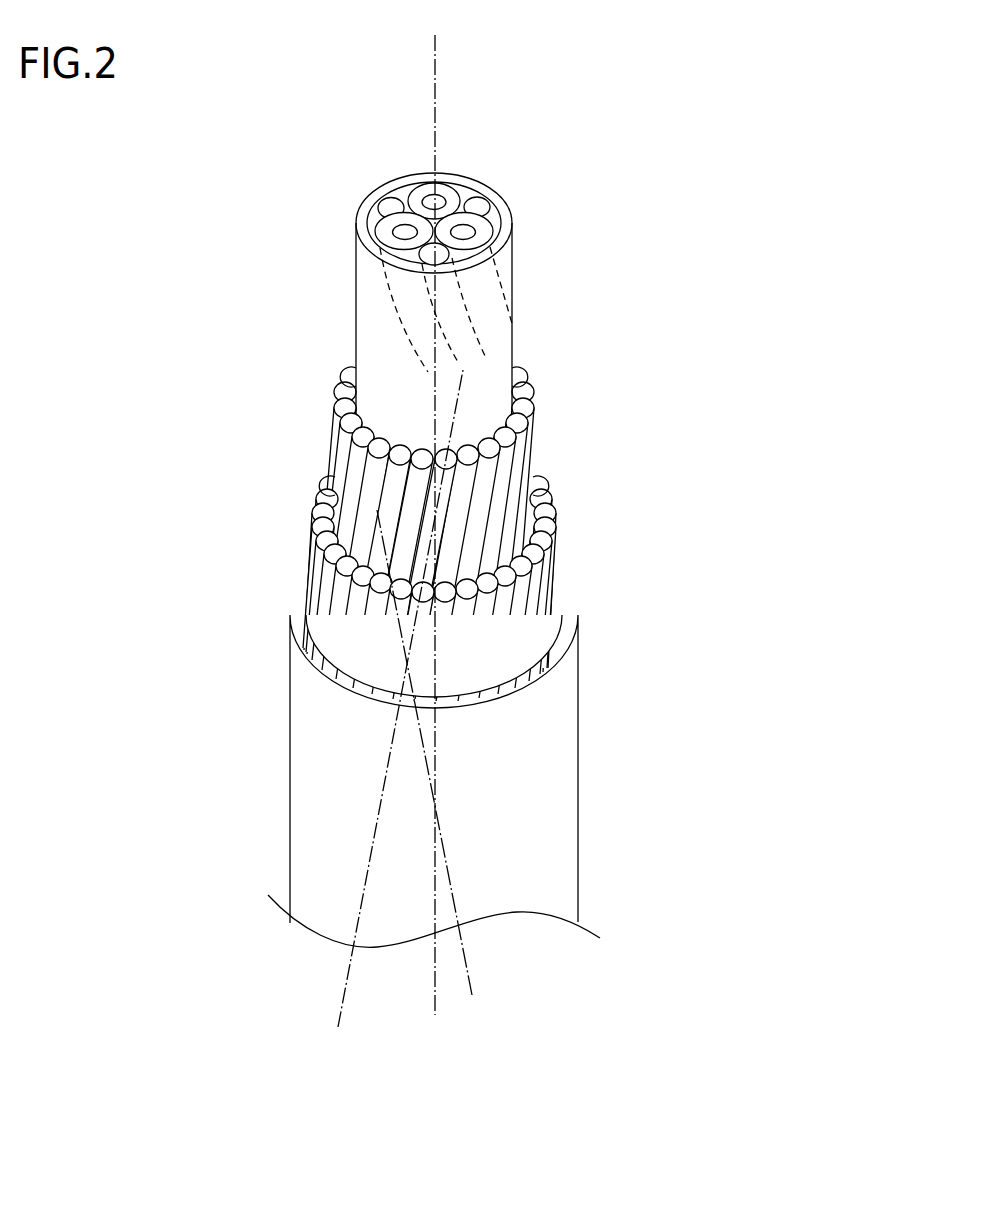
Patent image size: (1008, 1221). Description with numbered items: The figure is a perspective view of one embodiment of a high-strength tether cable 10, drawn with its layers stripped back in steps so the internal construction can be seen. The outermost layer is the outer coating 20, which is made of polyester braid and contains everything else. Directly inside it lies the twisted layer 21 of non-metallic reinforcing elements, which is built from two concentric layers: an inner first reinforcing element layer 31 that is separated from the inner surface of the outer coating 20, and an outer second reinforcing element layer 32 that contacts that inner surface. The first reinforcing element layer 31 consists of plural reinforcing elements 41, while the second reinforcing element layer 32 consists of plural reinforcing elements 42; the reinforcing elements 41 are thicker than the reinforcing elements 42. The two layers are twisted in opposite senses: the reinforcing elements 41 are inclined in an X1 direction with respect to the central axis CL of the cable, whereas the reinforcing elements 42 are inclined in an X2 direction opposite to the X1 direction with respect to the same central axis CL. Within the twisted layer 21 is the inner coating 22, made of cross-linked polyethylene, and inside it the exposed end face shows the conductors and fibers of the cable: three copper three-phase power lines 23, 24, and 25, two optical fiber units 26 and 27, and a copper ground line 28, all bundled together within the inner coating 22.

The tether cable 10 is at (541, 550).
The outer coating 20 is at (558, 693).
The twisted layer 21 is at (483, 534).
The inner coating 22 is at (471, 268).
The three-phase power line 23 is at (478, 233).
The three-phase power line 24 is at (380, 228).
The three-phase power line 25 is at (452, 197).
The optical fiber unit 26 is at (480, 259).
The optical fiber unit 27 is at (385, 207).
The ground line 28 is at (483, 207).
The first reinforcing element layer 31 is at (464, 479).
The second reinforcing element layer 32 is at (442, 586).
The reinforcing element 41 is at (333, 396).
The reinforcing element 42 is at (547, 514).
The central axis CL is at (435, 70).
The X1 direction X1 is at (340, 1012).
The X2 direction X2 is at (467, 968).